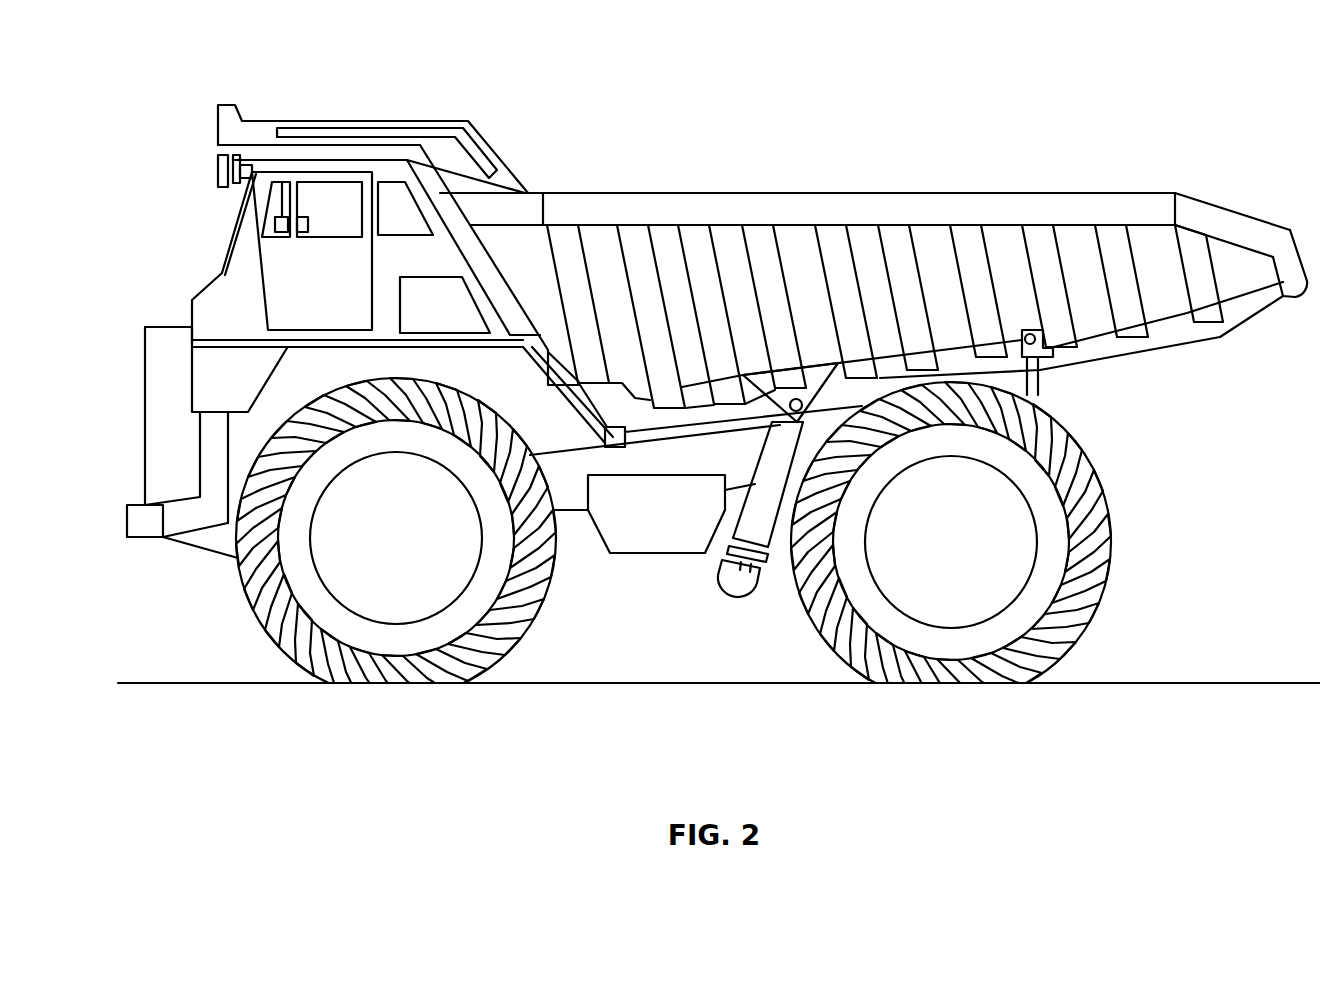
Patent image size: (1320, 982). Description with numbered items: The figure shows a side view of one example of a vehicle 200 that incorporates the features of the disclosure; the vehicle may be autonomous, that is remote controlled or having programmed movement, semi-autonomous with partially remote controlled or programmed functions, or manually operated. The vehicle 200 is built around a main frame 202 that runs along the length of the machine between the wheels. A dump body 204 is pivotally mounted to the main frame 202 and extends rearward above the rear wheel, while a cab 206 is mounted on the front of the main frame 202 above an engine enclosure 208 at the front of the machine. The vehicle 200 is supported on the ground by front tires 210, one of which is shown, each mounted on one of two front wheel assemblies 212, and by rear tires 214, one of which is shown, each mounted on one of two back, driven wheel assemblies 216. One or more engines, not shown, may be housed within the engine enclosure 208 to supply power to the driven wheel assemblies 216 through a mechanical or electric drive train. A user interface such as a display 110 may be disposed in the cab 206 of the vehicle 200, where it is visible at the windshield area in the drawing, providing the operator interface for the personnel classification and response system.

The display 110 is at (282, 217).
The vehicle 200 is at (1008, 80).
The main frame 202 is at (570, 493).
The dump body 204 is at (755, 213).
The cab 206 is at (275, 258).
The engine enclosure 208 is at (268, 396).
The front tire 210 is at (302, 636).
The front wheel assembly 212 is at (413, 595).
The rear tire 214 is at (992, 668).
The back wheel assembly 216 is at (1000, 573).